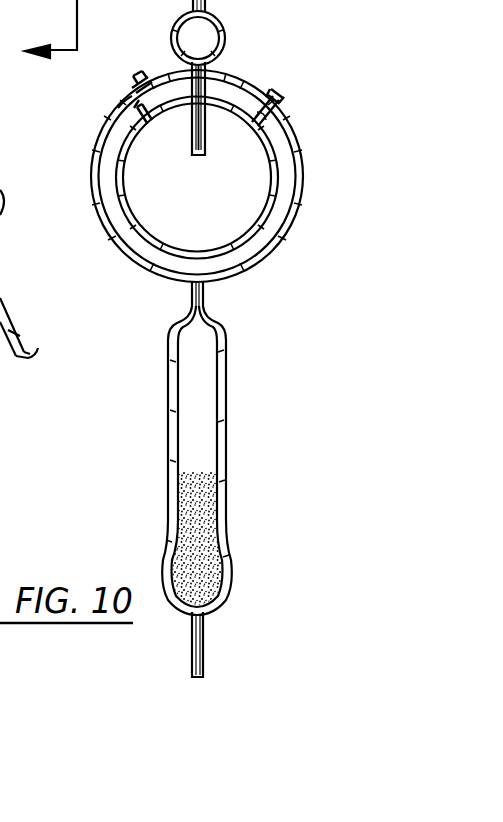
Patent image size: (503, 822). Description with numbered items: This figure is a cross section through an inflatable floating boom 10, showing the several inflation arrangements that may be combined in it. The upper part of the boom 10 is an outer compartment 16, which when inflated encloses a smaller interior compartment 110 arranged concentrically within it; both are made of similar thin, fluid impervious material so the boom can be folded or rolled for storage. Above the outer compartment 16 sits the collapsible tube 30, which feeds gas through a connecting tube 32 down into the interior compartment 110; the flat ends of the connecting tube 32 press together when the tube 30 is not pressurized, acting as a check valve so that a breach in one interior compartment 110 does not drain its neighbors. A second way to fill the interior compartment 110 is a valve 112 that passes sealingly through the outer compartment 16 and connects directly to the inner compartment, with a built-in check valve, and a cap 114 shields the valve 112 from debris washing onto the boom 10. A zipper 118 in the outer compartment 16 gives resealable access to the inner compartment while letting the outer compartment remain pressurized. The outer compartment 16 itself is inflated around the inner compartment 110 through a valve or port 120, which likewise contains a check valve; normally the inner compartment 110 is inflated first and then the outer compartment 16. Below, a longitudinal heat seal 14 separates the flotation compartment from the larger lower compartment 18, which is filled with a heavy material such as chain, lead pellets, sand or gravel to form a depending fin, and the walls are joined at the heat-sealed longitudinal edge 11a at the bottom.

The boom 10 is at (267, 287).
The longitudinal edge 11a is at (203, 637).
The longitudinal heat seal 14 is at (192, 300).
The compartment 16 is at (294, 197).
The compartment 18 is at (218, 407).
The collapsible tube 30 is at (224, 29).
The connecting tube 32 is at (191, 141).
The interior compartment 110 is at (182, 225).
The valve 112 is at (260, 140).
The cap 114 is at (298, 68).
The longitudinal zipper 118 is at (127, 100).
The valve or port 120 is at (138, 80).